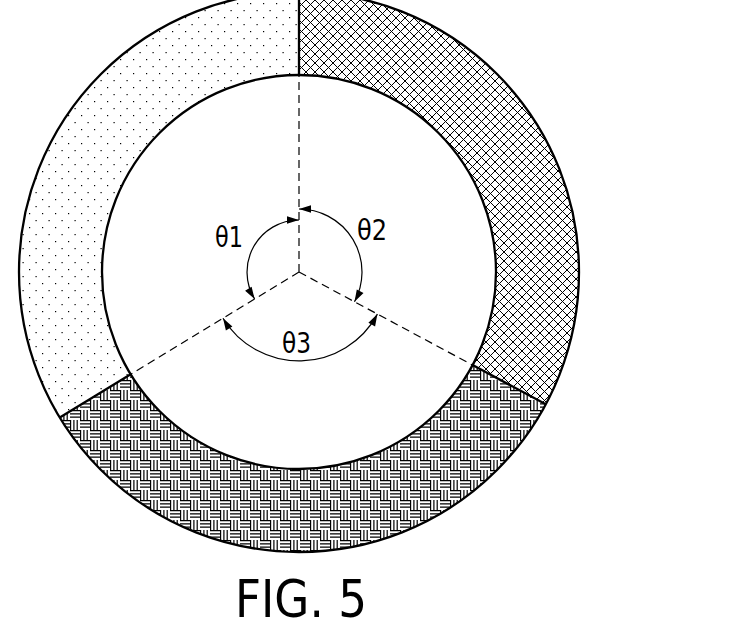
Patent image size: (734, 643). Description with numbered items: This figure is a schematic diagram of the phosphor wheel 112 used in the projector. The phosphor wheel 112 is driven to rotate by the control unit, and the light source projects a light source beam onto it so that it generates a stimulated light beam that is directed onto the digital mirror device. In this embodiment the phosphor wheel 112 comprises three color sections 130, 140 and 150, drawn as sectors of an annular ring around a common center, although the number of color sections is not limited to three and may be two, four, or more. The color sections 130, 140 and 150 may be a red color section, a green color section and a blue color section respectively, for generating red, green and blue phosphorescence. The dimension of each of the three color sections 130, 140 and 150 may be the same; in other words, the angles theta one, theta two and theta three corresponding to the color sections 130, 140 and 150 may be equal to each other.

The phosphor wheel 112 is at (585, 107).
The color section 130 is at (115, 160).
The color section 140 is at (520, 158).
The color section 150 is at (330, 526).